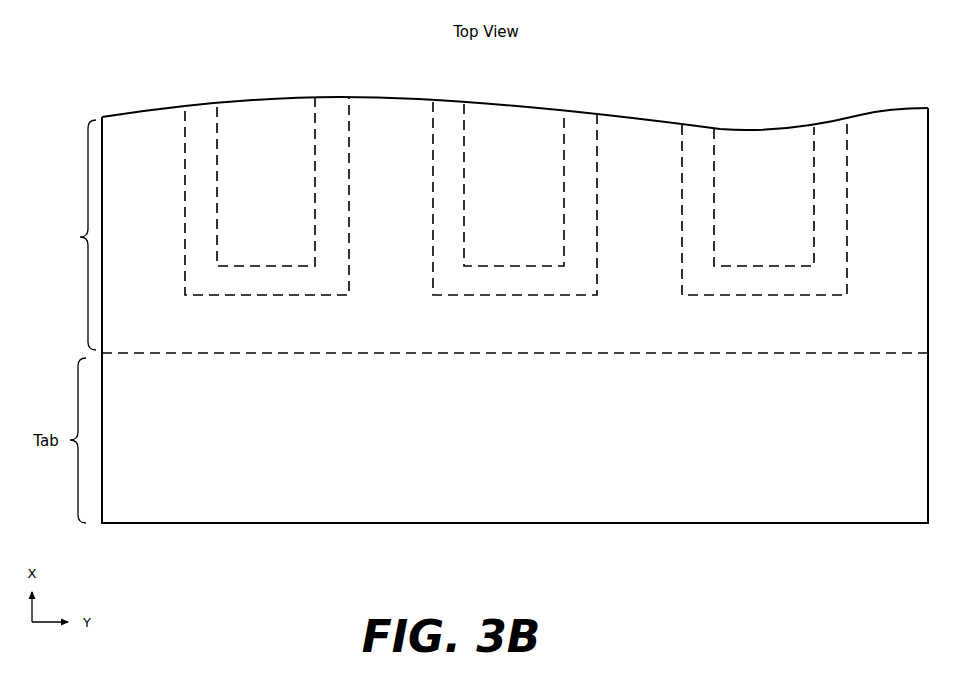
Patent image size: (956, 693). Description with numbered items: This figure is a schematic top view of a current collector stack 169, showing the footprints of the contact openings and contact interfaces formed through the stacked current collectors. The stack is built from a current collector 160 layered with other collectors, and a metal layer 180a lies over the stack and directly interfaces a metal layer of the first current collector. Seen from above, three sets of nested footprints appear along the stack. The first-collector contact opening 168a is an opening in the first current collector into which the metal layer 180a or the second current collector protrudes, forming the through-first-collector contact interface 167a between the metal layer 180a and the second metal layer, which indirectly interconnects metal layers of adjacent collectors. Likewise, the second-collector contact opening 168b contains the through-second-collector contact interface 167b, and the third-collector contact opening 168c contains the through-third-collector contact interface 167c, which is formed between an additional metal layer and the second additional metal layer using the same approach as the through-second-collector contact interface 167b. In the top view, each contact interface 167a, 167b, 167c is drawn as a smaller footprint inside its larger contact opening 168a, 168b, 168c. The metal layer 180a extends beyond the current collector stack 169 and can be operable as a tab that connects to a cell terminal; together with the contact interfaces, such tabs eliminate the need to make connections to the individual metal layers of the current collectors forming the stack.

The current collector 160 is at (481, 315).
The current collector stack 169 is at (133, 65).
The metal layer 180a is at (126, 146).
The through-first-collector contact interface 167a is at (269, 182).
The first-collector contact opening 168a is at (205, 138).
The through-second-collector contact interface 167b is at (512, 170).
The second-collector contact opening 168b is at (450, 163).
The through-third-collector contact interface 167c is at (757, 162).
The third-collector contact opening 168c is at (700, 165).